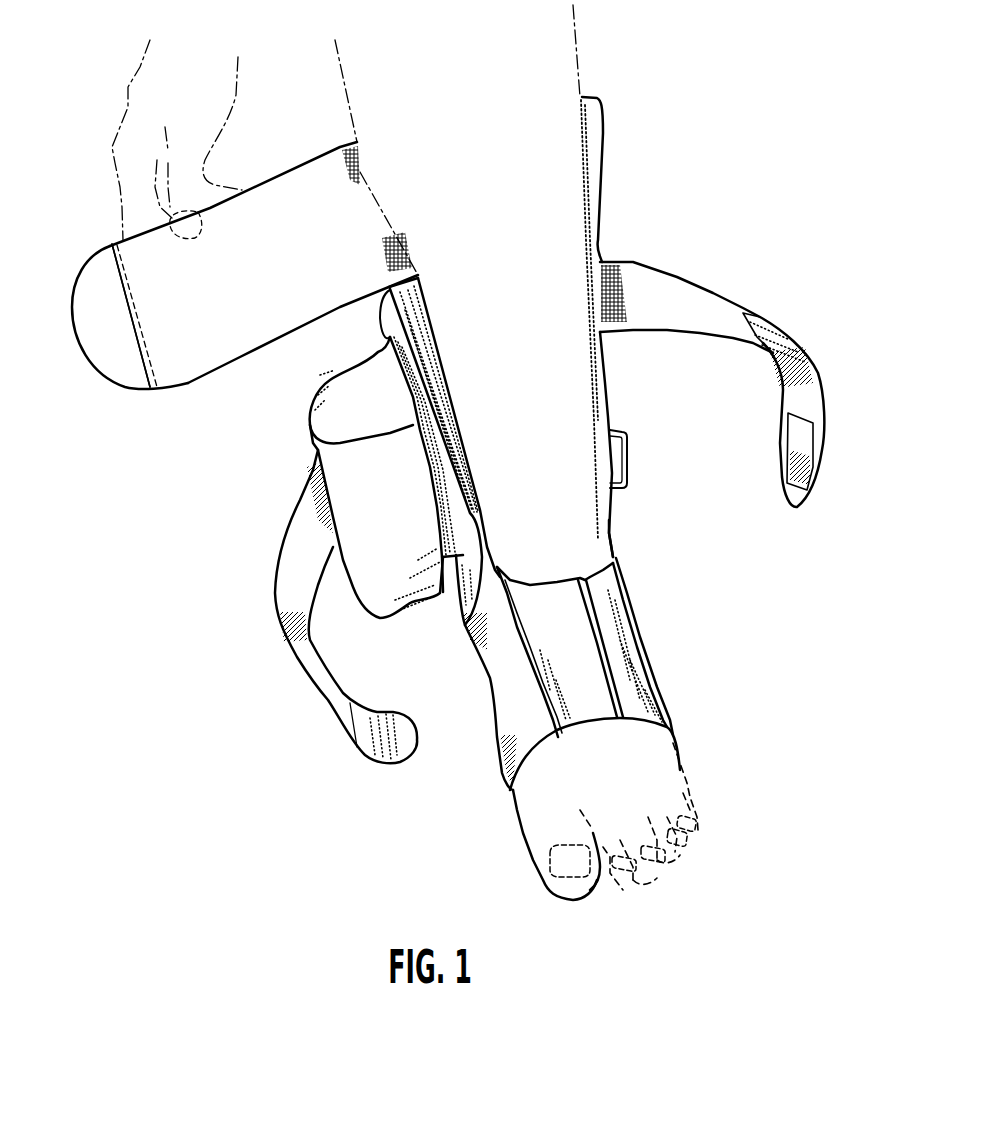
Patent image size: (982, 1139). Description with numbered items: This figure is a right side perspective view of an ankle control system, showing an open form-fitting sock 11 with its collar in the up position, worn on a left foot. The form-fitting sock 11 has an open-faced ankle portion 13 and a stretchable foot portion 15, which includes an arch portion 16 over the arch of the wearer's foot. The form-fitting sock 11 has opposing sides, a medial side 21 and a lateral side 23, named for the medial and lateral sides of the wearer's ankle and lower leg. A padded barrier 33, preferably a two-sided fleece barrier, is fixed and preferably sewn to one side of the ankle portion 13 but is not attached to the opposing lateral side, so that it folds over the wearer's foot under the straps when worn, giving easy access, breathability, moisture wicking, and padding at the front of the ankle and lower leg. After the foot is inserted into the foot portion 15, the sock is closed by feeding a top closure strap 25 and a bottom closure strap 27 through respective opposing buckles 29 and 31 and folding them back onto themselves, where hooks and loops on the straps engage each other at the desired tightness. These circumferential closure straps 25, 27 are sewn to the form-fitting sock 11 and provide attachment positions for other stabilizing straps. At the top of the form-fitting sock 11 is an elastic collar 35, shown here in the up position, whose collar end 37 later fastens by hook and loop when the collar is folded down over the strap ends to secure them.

The form-fitting sock 11 is at (211, 491).
The open-faced ankle portion 13 is at (632, 405).
The stretchable foot portion 15 is at (690, 668).
The arch portion 16 is at (553, 592).
The medial side 21 is at (330, 366).
The lateral side 23 is at (630, 521).
The top closure strap 25 is at (693, 297).
The bottom closure strap 27 is at (300, 650).
The buckle 29 is at (388, 292).
The buckle 31 is at (630, 453).
The padded barrier 33 is at (390, 521).
The elastic collar 35 is at (127, 257).
The collar end 37 is at (93, 287).